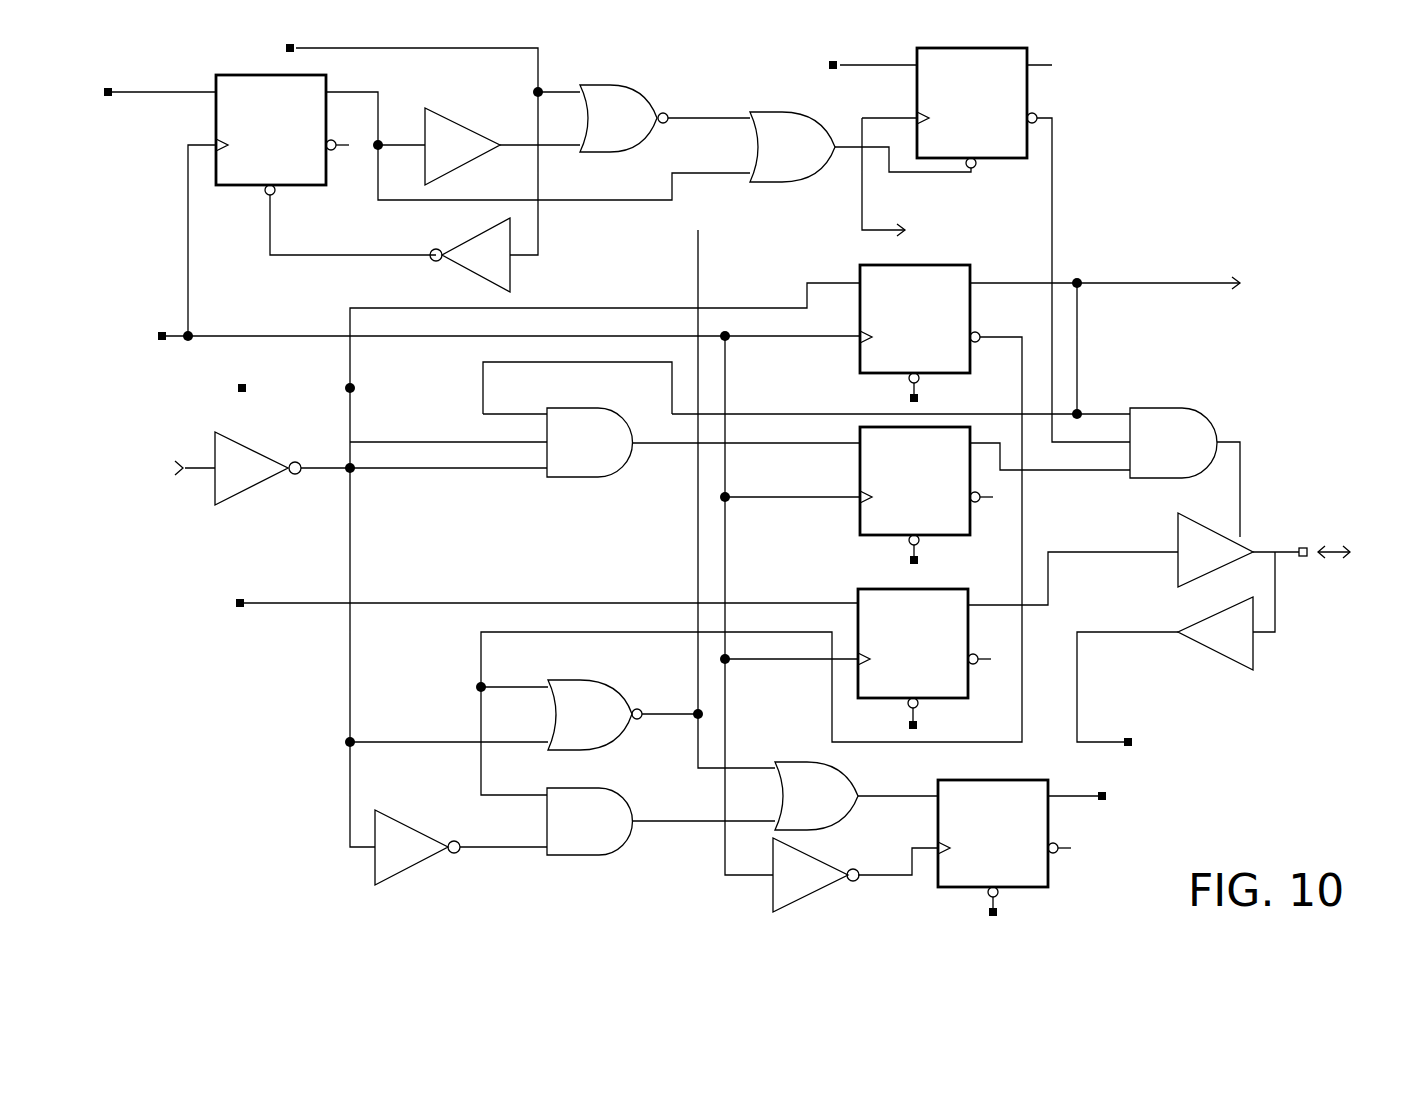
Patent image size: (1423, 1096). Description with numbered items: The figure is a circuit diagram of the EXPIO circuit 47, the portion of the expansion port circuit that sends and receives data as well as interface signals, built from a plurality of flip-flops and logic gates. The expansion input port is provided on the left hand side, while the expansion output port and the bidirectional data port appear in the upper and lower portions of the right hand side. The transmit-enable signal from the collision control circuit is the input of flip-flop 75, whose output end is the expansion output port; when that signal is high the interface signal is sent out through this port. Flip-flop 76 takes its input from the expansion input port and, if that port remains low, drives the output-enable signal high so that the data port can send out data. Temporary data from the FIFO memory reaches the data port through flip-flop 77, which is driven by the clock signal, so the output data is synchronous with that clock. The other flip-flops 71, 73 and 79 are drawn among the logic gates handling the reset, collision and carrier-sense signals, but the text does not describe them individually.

The EXPIO circuit 47 is at (1258, 80).
The flip-flop 71 is at (977, 168).
The flip-flop 73 is at (264, 193).
The flip-flop 75 is at (906, 384).
The flip-flop 76 is at (906, 546).
The flip-flop 77 is at (906, 709).
The flip-flop 79 is at (986, 897).